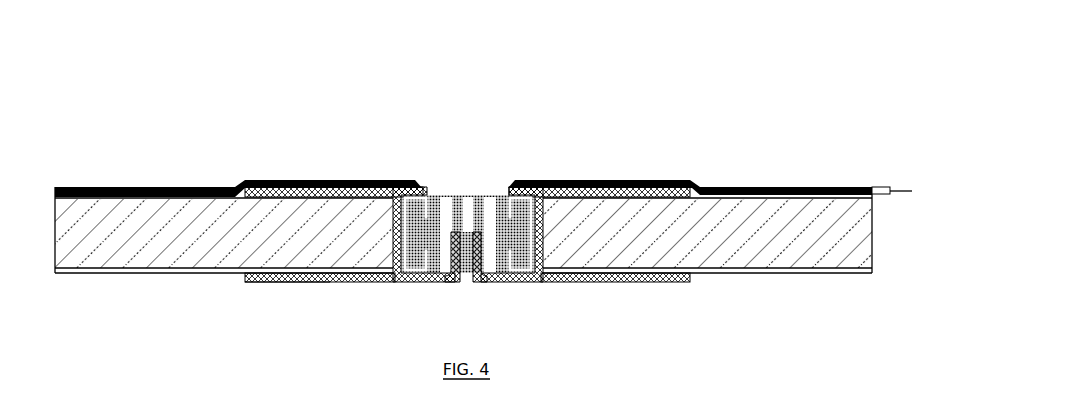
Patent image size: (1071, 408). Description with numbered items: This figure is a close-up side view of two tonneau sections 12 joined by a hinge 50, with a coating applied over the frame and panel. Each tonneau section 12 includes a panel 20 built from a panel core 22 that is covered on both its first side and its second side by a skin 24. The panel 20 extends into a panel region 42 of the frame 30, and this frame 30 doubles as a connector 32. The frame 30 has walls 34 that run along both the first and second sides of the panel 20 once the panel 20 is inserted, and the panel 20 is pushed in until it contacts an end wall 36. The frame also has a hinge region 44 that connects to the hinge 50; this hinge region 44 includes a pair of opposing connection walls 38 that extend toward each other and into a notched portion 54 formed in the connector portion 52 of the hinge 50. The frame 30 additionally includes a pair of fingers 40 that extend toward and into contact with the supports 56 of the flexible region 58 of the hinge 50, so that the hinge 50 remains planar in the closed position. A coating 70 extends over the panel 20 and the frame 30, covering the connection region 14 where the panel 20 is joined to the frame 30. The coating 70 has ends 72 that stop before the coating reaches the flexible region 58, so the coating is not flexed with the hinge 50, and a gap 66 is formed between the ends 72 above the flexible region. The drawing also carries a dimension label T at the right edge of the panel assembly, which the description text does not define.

The tonneau section 12 is at (483, 206).
The connection region 14 is at (235, 200).
The panel 20 is at (227, 234).
The panel core 22 is at (78, 227).
The skin 24 is at (172, 266).
The frame 30 is at (722, 229).
The connector 32 is at (707, 230).
The walls 34 is at (290, 283).
The end wall 36 is at (392, 239).
The connection walls 38 is at (395, 262).
The fingers 40 is at (477, 273).
The panel region 42 is at (298, 313).
The hinge region 44 is at (425, 295).
The hinge 50 is at (443, 238).
The connector portion 52 is at (528, 290).
The notched portion 54 is at (572, 181).
The supports 56 is at (481, 187).
The flexible region 58 is at (438, 188).
The gap 66 is at (443, 215).
The coating 70 is at (262, 186).
The ends 72 is at (512, 183).
The thickness T is at (904, 191).